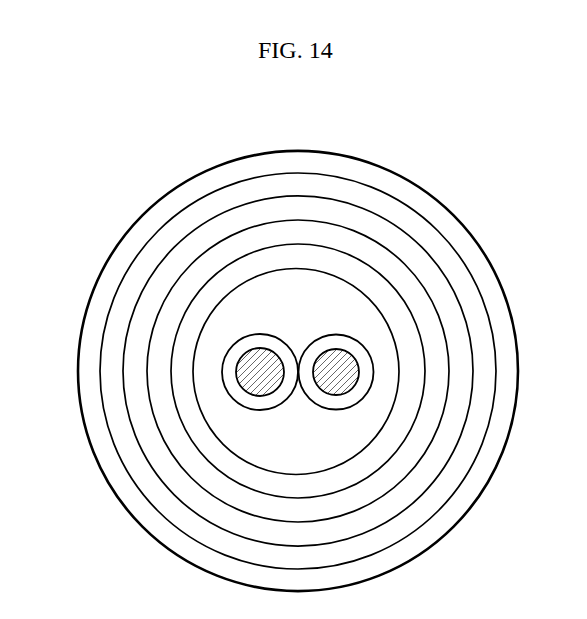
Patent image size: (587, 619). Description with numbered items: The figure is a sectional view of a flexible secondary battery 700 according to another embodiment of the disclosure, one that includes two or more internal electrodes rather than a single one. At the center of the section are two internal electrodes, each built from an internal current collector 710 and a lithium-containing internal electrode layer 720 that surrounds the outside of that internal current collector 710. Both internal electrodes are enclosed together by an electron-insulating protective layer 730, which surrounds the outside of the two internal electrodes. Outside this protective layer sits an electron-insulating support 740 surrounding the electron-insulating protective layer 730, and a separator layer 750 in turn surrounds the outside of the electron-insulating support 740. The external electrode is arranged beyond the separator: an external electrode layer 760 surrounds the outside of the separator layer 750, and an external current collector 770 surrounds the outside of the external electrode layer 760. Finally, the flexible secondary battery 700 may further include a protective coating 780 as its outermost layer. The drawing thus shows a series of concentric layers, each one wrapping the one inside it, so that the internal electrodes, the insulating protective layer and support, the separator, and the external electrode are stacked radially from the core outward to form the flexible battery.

The flexible secondary battery 700 is at (116, 161).
The internal current collector 710 is at (253, 373).
The lithium-containing internal electrode layer 720 is at (248, 347).
The electron-insulating protective layer 730 is at (383, 373).
The electron-insulating support 740 is at (410, 355).
The separator layer 750 is at (433, 337).
The external electrode layer 760 is at (443, 310).
The external current collector 770 is at (472, 261).
The protective coating 780 is at (458, 228).